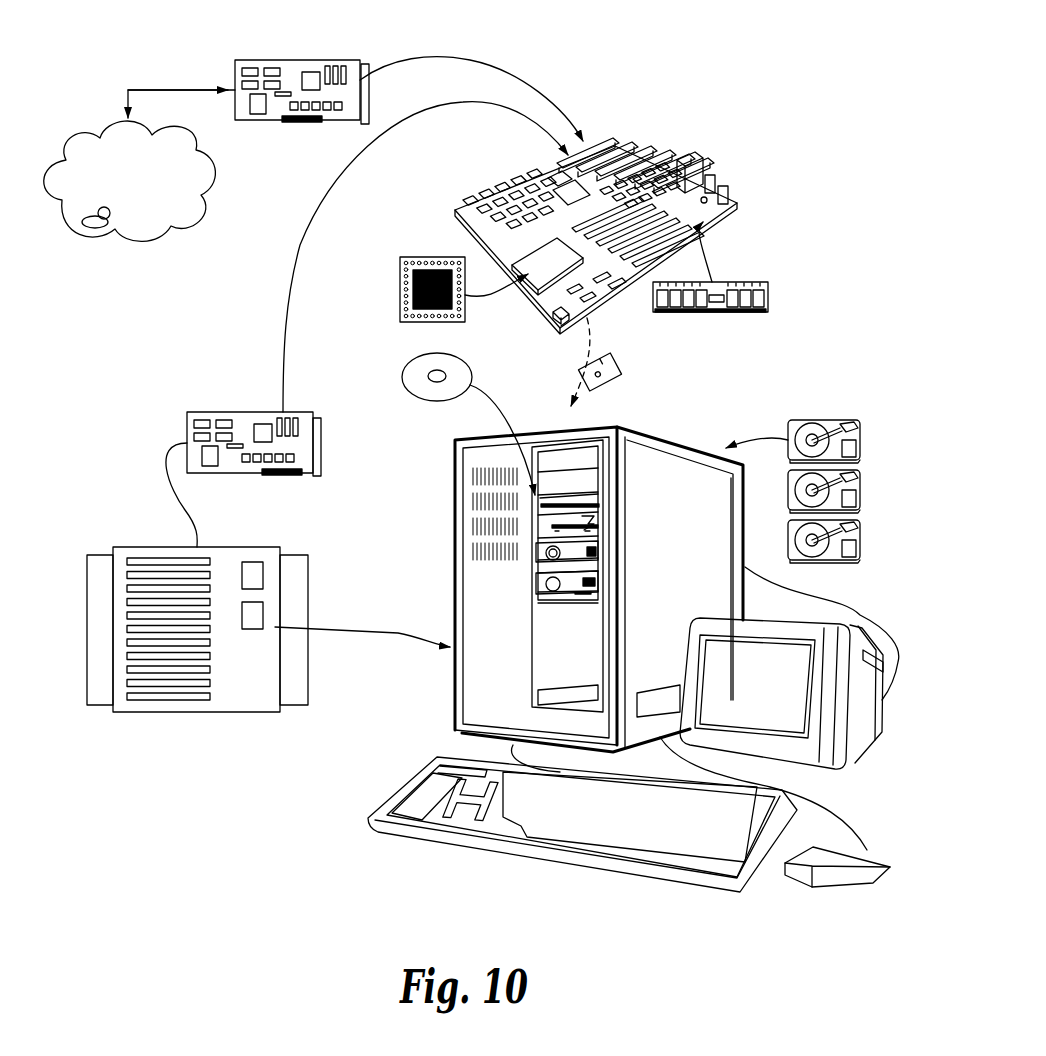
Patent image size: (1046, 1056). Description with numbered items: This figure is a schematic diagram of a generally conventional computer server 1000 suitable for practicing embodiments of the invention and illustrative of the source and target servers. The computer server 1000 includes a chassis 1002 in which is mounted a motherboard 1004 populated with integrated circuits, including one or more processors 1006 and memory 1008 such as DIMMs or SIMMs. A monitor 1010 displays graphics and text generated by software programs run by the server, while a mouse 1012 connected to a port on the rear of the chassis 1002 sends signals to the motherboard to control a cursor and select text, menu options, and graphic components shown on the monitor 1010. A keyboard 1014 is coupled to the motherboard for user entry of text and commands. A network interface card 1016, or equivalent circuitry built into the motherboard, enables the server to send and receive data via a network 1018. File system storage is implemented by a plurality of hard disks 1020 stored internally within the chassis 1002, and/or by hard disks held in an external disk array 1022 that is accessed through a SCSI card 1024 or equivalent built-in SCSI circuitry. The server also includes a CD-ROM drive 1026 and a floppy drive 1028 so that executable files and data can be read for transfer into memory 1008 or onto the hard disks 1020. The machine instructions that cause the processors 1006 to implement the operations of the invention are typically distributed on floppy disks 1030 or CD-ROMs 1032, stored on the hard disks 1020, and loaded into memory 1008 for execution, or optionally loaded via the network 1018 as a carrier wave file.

The computer server 1000 is at (250, 872).
The chassis 1002 is at (457, 706).
The motherboard 1004 is at (505, 176).
The processors 1006 is at (400, 290).
The memory 1008 is at (768, 298).
The monitor 1010 is at (865, 732).
The mouse 1012 is at (873, 880).
The keyboard 1014 is at (610, 845).
The network interface card 1016 is at (237, 70).
The network 1018 is at (168, 213).
The hard disks 1020 is at (815, 422).
The external disk array 1022 is at (298, 592).
The SCSI card 1024 is at (313, 462).
The CD-ROM drive 1026 is at (573, 498).
The floppy drive 1028 is at (600, 523).
The floppy disks 1030 is at (617, 358).
The CD-ROMs 1032 is at (465, 370).